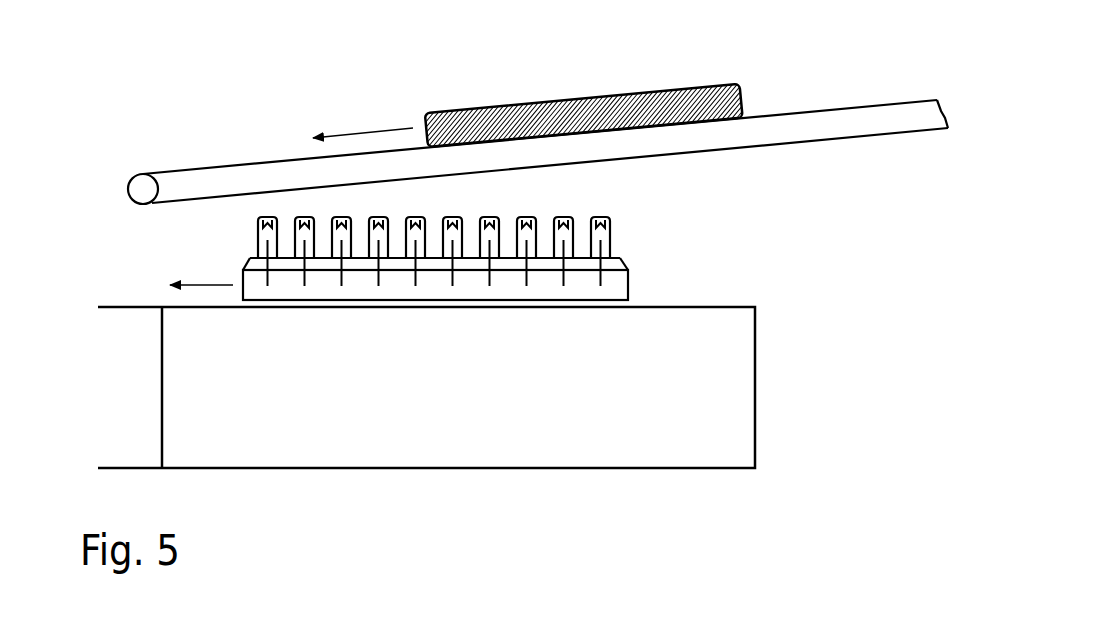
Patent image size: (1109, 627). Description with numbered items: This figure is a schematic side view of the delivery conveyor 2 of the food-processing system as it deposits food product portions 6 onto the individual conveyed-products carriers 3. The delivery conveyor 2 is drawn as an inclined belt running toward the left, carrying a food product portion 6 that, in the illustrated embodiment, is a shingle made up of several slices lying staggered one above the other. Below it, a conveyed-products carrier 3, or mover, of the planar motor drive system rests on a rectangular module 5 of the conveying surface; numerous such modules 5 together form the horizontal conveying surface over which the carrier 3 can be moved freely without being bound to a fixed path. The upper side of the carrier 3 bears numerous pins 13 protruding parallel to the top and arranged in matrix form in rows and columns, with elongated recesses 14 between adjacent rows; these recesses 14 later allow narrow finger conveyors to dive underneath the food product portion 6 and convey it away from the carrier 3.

The delivery conveyor 2 is at (830, 90).
The food product portion 6 is at (567, 115).
The conveyed-products carrier 3 is at (642, 277).
The elongated recess 14 is at (510, 235).
The pin 13 is at (602, 233).
The rectangular module 5 is at (128, 330).